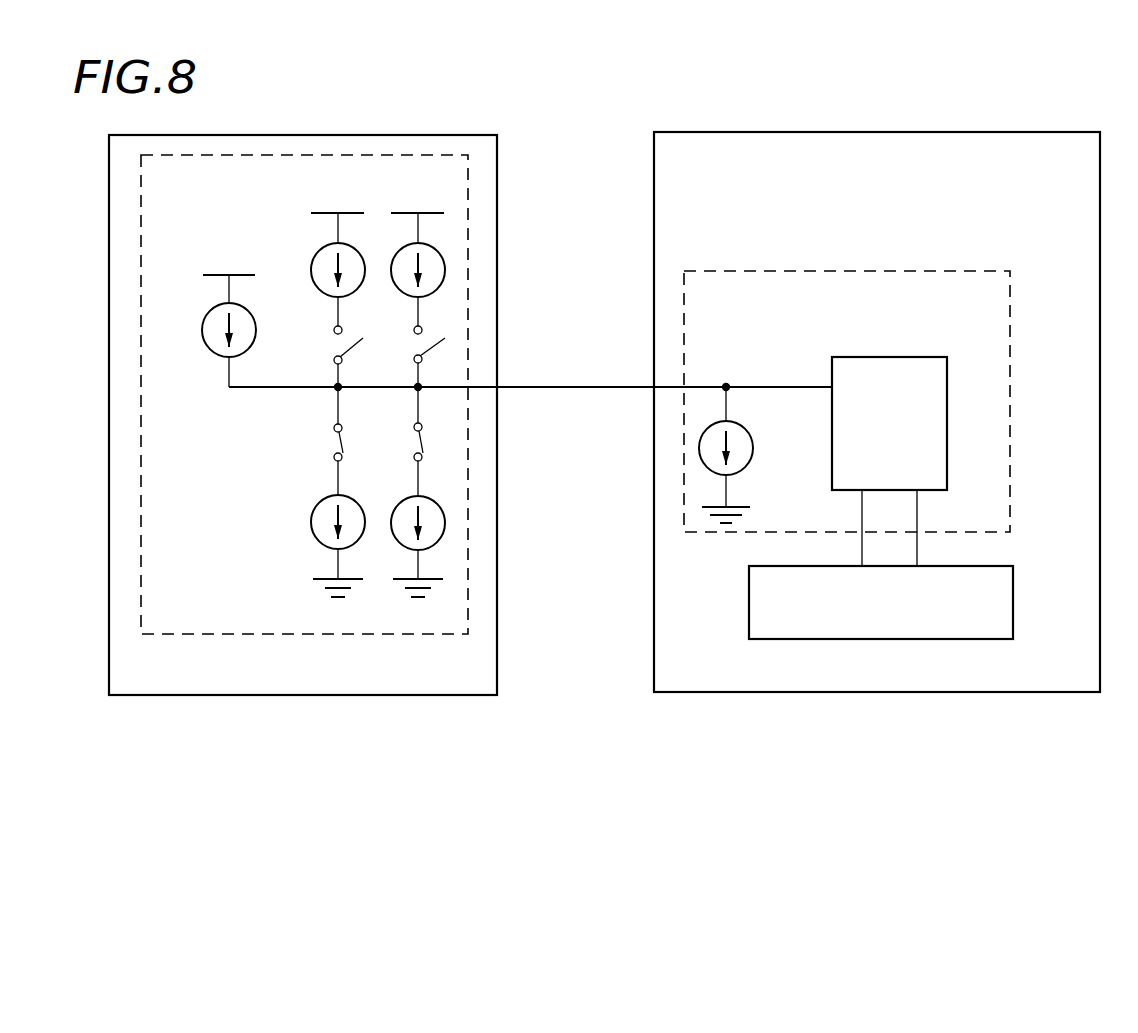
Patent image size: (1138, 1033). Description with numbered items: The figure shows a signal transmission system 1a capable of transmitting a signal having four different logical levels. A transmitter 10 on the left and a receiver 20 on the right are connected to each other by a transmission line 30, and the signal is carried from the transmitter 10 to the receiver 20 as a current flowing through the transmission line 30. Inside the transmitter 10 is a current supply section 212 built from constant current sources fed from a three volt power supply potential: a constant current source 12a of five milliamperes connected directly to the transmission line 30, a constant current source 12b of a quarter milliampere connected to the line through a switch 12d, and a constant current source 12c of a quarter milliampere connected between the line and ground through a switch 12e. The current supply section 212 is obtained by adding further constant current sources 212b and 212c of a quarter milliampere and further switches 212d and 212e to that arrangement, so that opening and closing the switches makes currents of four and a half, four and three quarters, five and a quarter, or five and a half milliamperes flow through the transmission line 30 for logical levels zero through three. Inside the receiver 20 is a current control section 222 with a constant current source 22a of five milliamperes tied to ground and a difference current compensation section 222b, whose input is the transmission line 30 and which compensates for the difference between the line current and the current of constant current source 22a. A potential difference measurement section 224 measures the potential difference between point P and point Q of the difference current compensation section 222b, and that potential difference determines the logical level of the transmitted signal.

The signal transmission system 1a is at (575, 760).
The transmitter 10 is at (342, 135).
The receiver 20 is at (978, 132).
The transmission line 30 is at (604, 387).
The constant current source 12a is at (203, 328).
The constant current source 12b is at (318, 252).
The constant current source 12c is at (313, 526).
The switch 12d is at (345, 347).
The switch 12e is at (338, 445).
The constant current source 22a is at (753, 451).
The current supply section 212 is at (165, 635).
The constant current source 212b is at (445, 270).
The constant current source 212c is at (447, 520).
The switch 212d is at (440, 348).
The switch 212e is at (424, 442).
The current control section 222 is at (975, 271).
The difference current compensation section 222b is at (888, 357).
The potential difference measurement section 224 is at (1013, 612).